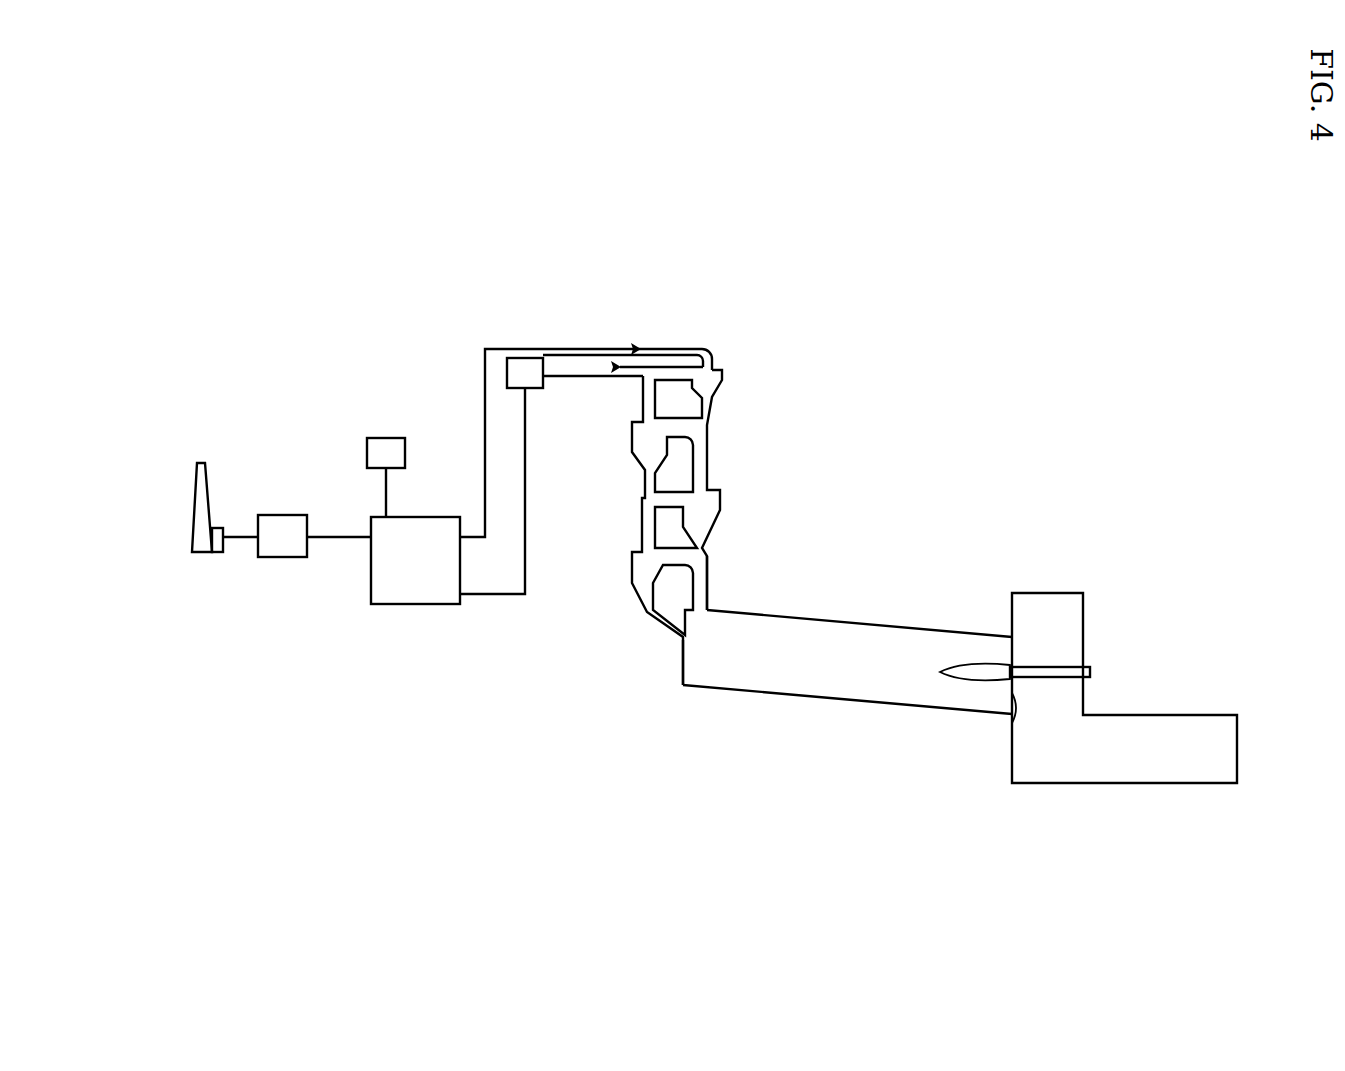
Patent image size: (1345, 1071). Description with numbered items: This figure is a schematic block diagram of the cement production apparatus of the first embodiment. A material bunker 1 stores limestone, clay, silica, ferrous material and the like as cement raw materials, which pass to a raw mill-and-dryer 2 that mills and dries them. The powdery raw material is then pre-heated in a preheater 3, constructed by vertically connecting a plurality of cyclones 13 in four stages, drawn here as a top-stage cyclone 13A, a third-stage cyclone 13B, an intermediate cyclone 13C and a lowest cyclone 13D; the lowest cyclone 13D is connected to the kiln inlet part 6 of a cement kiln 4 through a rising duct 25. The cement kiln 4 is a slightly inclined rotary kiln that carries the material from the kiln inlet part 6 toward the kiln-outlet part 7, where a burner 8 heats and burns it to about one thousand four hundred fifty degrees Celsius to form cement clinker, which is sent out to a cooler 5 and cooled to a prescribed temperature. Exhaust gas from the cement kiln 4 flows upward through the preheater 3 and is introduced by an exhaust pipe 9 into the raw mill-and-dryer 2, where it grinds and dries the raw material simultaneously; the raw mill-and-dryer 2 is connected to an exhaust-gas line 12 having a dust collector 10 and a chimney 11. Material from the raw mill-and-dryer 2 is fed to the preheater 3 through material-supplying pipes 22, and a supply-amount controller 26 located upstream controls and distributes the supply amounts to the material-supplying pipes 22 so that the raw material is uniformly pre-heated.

The material bunker 1 is at (385, 438).
The raw mill-and-dryer 2 is at (397, 605).
The preheater 3 is at (710, 518).
The cement kiln 4 is at (862, 702).
The cooler 5 is at (1160, 723).
The kiln inlet part 6 is at (678, 684).
The kiln-outlet part 7 is at (1010, 724).
The burner 8 is at (1050, 672).
The exhaust pipe 9 is at (563, 348).
The dust collector 10 is at (277, 557).
The chimney 11 is at (195, 488).
The exhaust-gas line 12 is at (337, 534).
The cyclones 13 is at (710, 496).
The cyclone of the top stage 13A is at (713, 375).
The cyclone of the third stage 13B is at (643, 458).
The third passage chamber 13C is at (712, 510).
The lowest cyclone 13D is at (638, 578).
The material-supplying pipes 22 is at (580, 377).
The rising duct 25 is at (703, 587).
The supply-amount controller 26 is at (517, 358).